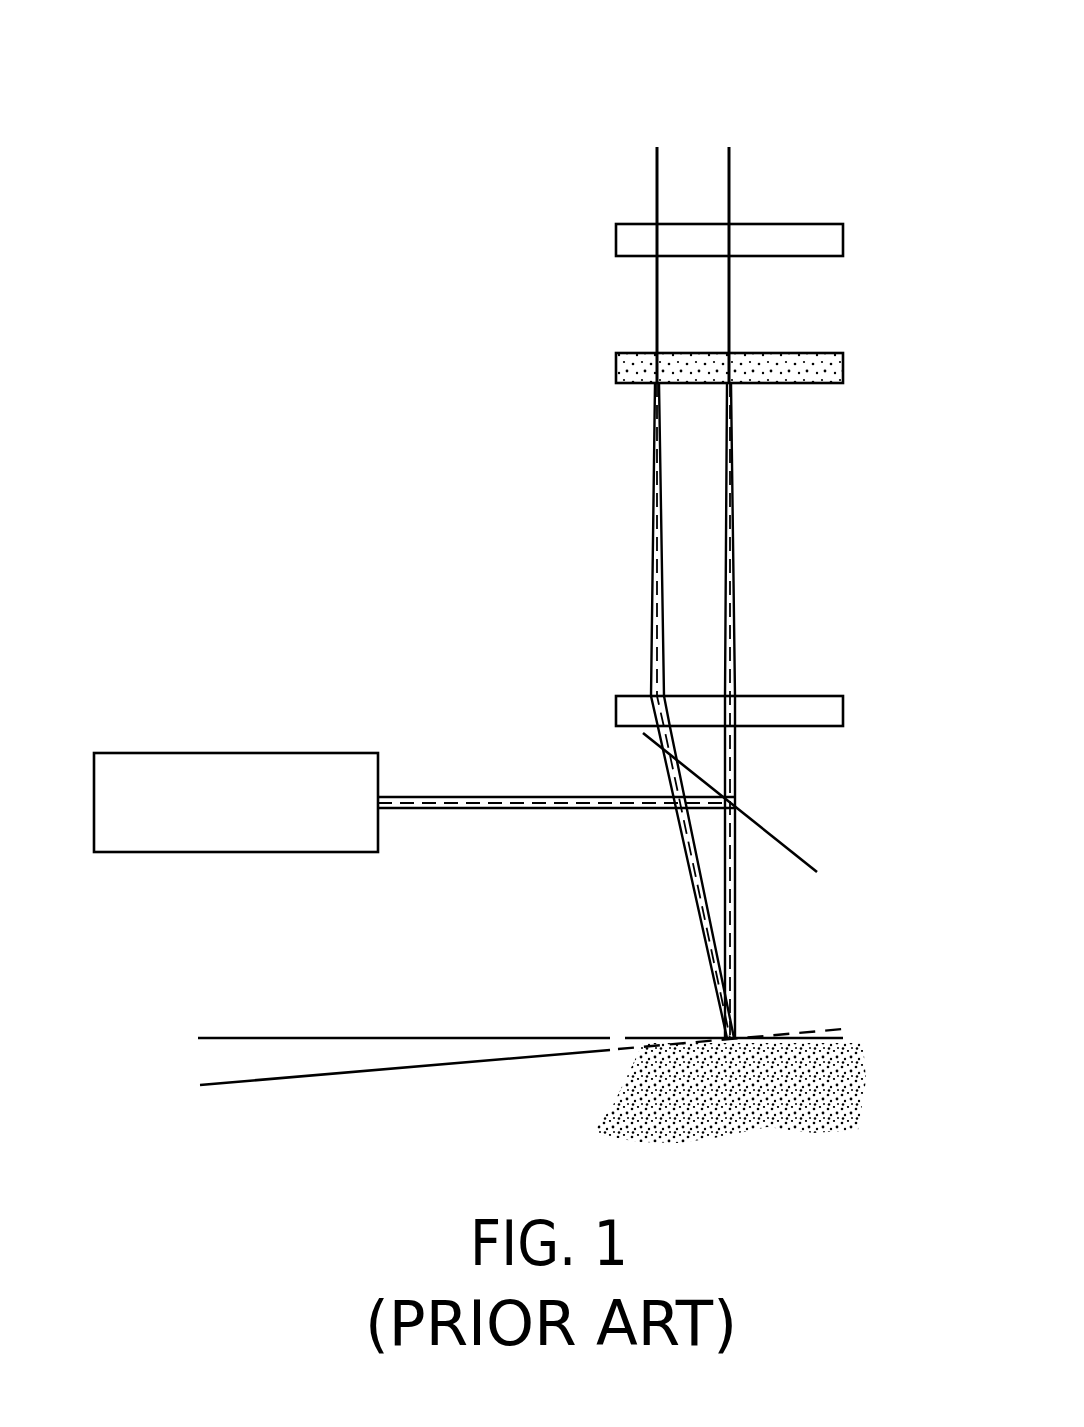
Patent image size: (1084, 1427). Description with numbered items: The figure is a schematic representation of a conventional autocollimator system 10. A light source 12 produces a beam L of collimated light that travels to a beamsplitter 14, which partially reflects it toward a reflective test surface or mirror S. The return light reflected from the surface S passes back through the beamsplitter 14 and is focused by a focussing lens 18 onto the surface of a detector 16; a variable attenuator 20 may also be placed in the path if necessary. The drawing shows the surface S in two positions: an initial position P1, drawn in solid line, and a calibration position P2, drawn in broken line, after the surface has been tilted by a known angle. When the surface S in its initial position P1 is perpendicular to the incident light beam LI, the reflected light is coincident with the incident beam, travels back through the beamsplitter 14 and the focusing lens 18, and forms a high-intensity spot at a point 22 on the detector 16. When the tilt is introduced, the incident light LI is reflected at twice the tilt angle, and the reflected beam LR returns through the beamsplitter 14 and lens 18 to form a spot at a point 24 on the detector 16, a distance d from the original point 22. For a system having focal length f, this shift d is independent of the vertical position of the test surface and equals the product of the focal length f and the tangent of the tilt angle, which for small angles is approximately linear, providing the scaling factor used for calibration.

The autocollimator system 10 is at (478, 118).
The light source 12 is at (167, 770).
The beamsplitter 14 is at (780, 837).
The detector 16 is at (803, 257).
The focussing lens 18 is at (793, 695).
The variable attenuator 20 is at (787, 383).
The point on detector 22 is at (730, 257).
The point on detector 24 is at (655, 257).
The beam of collimated light L is at (520, 808).
The reflected beam LR is at (688, 875).
The incident light beam LI is at (737, 930).
The reflective test surface S is at (633, 1038).
The initial position P1 is at (845, 1038).
The calibration position P2 is at (830, 1030).
The shift distance d is at (605, 162).
The focal length f is at (605, 254).